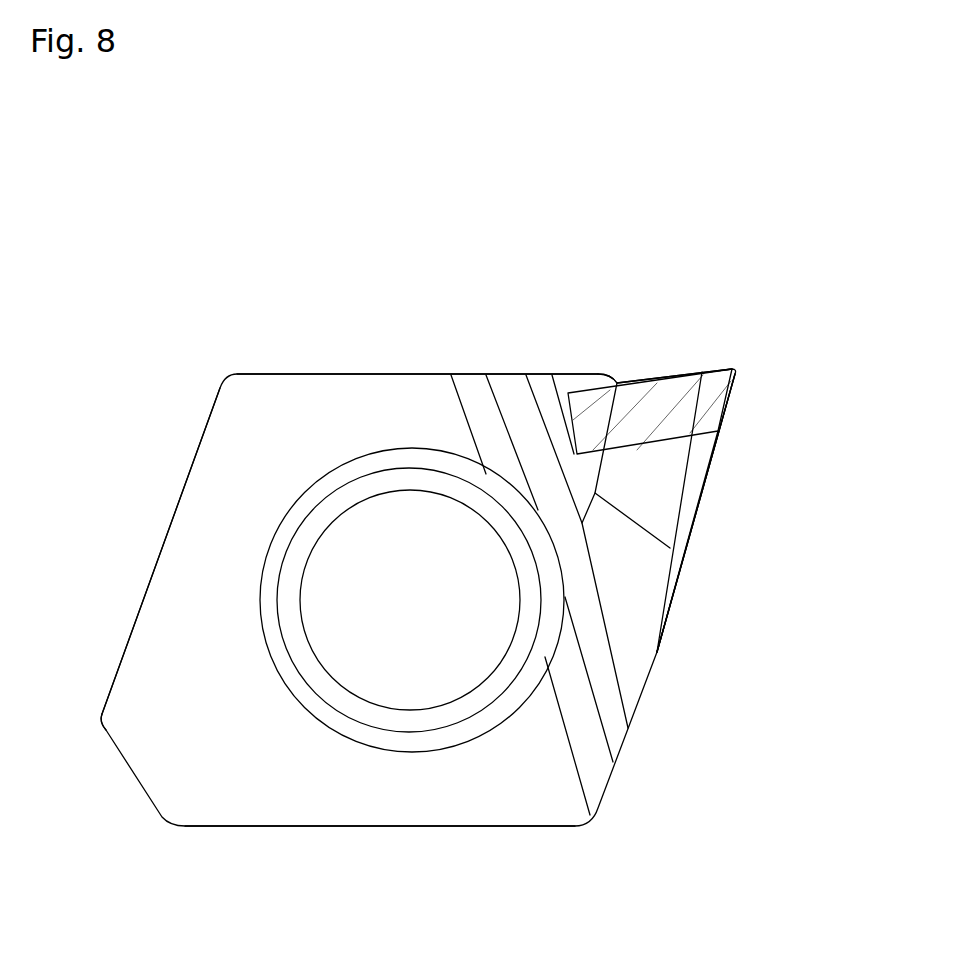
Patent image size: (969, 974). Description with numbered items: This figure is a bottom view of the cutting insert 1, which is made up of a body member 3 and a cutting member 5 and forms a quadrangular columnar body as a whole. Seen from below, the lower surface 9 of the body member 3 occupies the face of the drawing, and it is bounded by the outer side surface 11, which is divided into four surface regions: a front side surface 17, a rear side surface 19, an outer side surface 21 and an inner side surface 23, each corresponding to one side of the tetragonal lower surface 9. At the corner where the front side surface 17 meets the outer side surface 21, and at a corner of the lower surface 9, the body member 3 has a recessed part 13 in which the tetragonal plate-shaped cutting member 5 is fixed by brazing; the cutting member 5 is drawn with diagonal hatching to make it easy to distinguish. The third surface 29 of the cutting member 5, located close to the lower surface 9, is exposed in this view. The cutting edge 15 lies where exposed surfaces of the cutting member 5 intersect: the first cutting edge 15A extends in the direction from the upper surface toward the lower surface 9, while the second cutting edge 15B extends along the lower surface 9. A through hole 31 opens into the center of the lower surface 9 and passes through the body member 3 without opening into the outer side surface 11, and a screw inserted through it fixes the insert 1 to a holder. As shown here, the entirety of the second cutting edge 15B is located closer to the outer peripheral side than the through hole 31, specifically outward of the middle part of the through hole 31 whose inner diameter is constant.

The insert 1 is at (260, 295).
The body member 3 is at (203, 603).
The cutting member 5 is at (618, 410).
The lower surface 9 is at (187, 732).
The outer side surface 11 is at (460, 595).
The recessed part 13 is at (572, 380).
The cutting edge 15 is at (760, 439).
The first cutting edge 15A is at (735, 375).
The second cutting edge 15B is at (693, 432).
The front side surface 17 is at (408, 372).
The rear side surface 19 is at (300, 827).
The outer side surface 21 is at (680, 588).
The inner side surface 23 is at (180, 500).
The third surface 29 is at (667, 393).
The through hole 31 is at (488, 528).